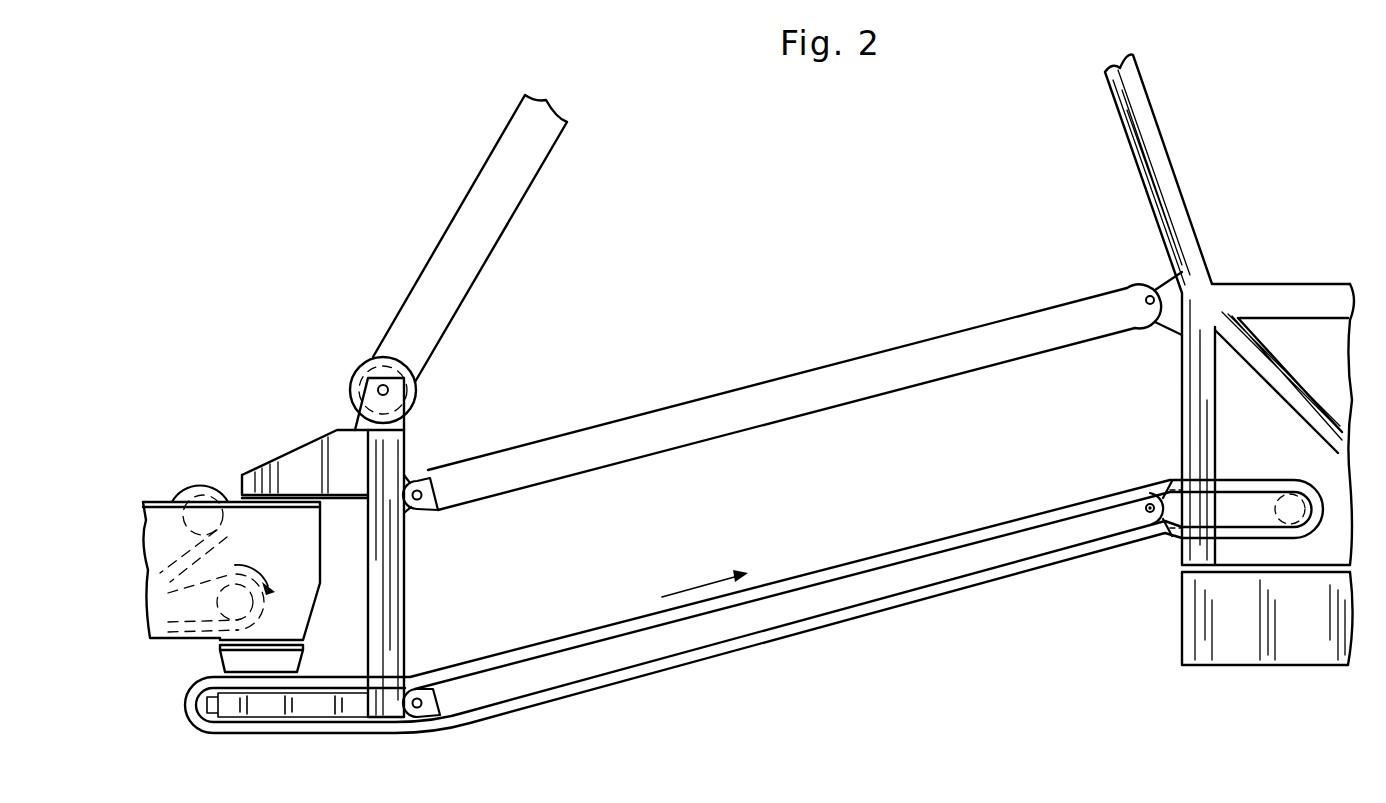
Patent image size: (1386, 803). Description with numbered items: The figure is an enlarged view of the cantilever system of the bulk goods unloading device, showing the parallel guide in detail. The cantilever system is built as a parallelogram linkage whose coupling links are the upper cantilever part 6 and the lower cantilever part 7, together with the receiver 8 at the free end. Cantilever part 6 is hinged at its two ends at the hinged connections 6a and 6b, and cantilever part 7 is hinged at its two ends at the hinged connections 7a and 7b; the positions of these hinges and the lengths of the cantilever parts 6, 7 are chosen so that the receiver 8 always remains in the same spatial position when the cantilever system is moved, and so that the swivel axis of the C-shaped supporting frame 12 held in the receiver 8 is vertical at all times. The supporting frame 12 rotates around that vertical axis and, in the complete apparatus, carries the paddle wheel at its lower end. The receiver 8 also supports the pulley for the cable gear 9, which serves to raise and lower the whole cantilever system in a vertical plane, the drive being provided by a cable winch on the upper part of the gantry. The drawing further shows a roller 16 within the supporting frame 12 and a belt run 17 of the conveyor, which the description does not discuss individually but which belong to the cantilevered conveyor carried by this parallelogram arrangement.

The cantilever part 6 is at (738, 402).
The hinged connection 6a is at (422, 478).
The hinged connection 6b is at (1146, 296).
The cantilever part 7 is at (841, 590).
The hinged connection 7a is at (416, 687).
The hinged connection 7b is at (1150, 503).
The receiver 8 is at (312, 453).
The cable gear 9 is at (485, 267).
The C-shaped supporting frame 12 is at (243, 521).
The roller 16 is at (292, 626).
The belt run 17 is at (585, 635).